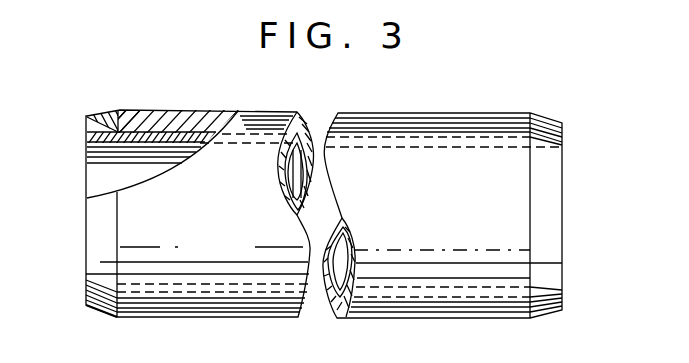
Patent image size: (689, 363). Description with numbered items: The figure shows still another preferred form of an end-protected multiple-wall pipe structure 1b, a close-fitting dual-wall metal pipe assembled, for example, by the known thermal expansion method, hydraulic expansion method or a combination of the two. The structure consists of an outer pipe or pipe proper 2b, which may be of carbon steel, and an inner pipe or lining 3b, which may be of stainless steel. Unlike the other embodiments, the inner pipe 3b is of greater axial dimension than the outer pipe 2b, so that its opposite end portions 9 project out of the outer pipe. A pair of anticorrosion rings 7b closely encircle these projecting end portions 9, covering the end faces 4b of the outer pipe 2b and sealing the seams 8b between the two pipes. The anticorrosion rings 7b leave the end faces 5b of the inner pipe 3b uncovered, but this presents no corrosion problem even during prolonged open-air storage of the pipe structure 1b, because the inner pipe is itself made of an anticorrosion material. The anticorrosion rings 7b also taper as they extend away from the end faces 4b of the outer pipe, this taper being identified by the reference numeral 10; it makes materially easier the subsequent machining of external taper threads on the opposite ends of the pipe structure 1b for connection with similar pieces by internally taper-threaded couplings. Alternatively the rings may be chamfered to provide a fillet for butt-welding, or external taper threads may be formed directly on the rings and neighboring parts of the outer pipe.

The pipe structure 1b is at (433, 108).
The outer pipe 2b is at (207, 118).
The inner pipe 3b is at (203, 144).
The end faces of the outer pipe 4b is at (116, 110).
The end faces of the inner pipe 5b is at (86, 138).
The anticorrosion rings 7b is at (98, 237).
The seams 8b is at (100, 115).
The projecting end portions 9 is at (100, 143).
The taper 10 is at (96, 307).